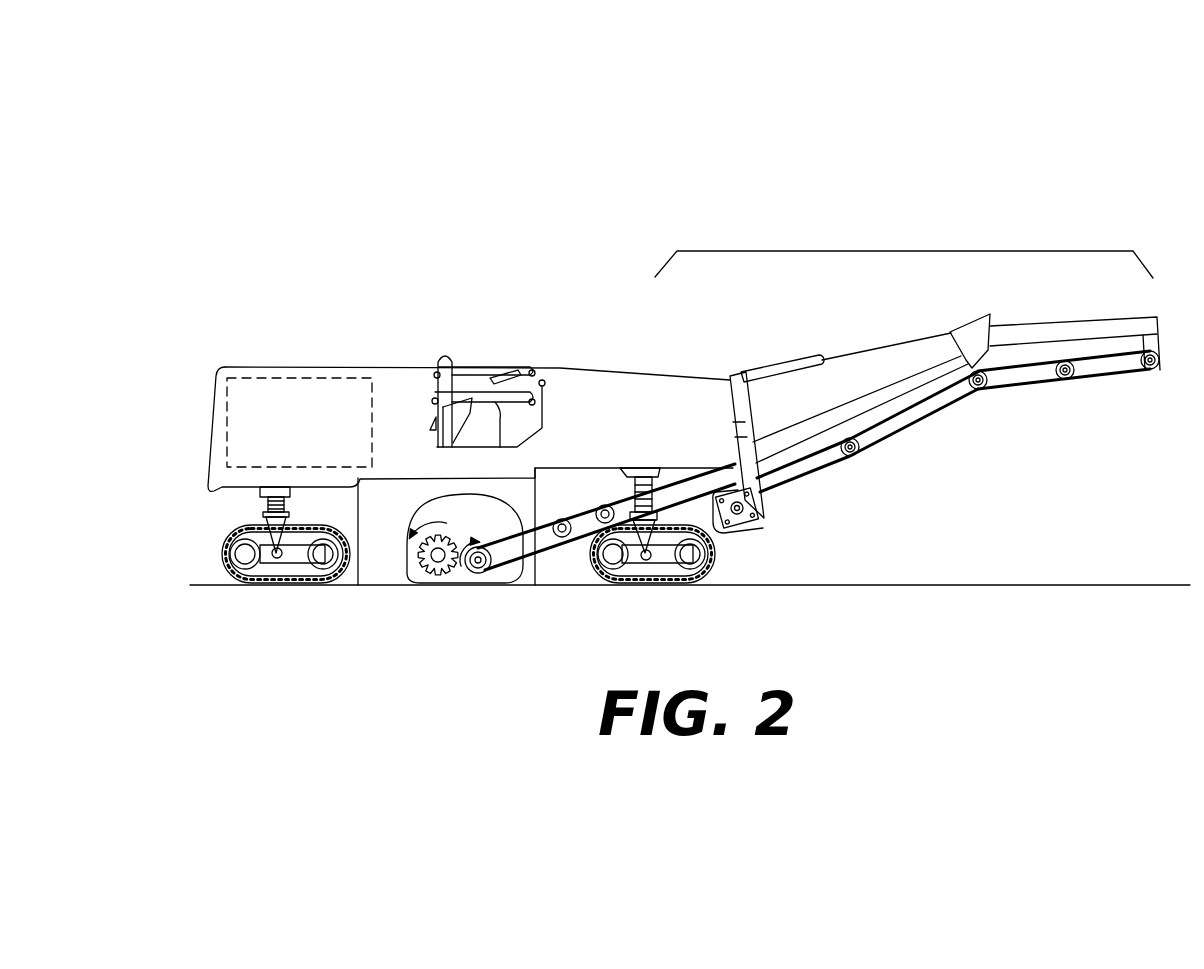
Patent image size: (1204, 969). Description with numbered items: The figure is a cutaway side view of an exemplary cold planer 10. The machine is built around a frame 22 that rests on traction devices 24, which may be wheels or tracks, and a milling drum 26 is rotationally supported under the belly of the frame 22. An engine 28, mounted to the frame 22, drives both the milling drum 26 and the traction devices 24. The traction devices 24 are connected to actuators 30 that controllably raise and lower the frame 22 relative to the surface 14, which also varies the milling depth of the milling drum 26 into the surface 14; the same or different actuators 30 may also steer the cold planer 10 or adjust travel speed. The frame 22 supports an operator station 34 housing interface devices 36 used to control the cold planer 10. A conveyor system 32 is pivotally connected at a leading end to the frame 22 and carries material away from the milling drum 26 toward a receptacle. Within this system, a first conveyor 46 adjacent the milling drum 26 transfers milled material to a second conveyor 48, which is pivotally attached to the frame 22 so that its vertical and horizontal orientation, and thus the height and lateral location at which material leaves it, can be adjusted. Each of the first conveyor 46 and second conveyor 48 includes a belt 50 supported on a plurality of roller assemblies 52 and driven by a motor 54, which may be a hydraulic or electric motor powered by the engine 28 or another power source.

The cold planer 10 is at (585, 170).
The surface 14 is at (1105, 582).
The frame 22 is at (626, 385).
The traction devices 24 is at (342, 573).
The milling drum 26 is at (447, 578).
The engine 28 is at (265, 378).
The actuators 30 is at (264, 518).
The conveyor system 32 is at (918, 252).
The operator station 34 is at (473, 320).
The interface devices 36 is at (494, 372).
The first conveyor 46 is at (570, 553).
The second conveyor 48 is at (922, 487).
The belt 50 is at (590, 505).
The roller assemblies 52 is at (853, 456).
The motor 54 is at (760, 523).